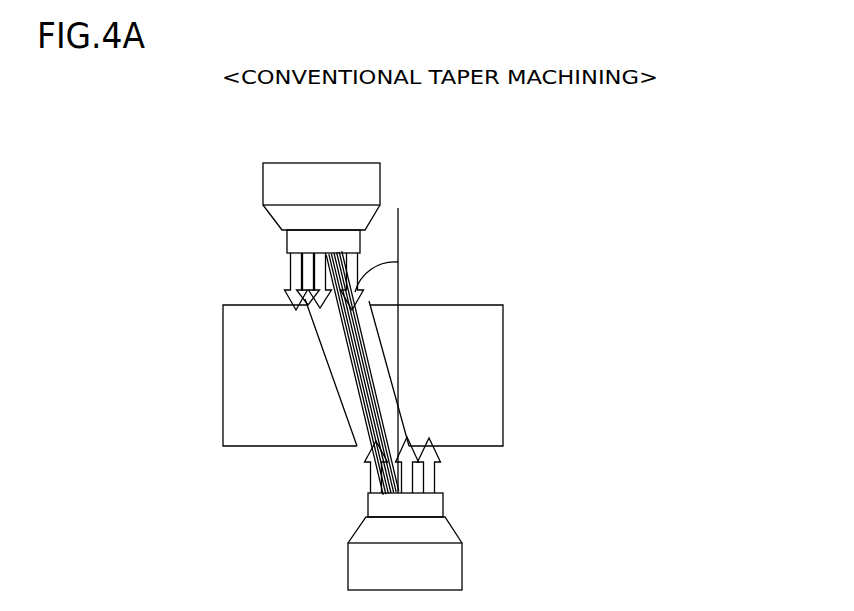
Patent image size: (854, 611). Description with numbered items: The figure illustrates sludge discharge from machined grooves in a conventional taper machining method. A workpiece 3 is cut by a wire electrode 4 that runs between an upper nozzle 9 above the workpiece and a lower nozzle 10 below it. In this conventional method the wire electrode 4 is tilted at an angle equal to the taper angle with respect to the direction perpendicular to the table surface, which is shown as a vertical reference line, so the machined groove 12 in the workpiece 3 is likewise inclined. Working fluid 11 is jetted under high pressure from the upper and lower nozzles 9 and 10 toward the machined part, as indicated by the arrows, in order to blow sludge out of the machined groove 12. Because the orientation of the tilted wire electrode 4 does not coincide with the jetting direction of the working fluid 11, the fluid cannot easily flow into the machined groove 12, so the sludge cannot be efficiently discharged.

The workpiece 3 is at (503, 342).
The wire electrode 4 is at (402, 298).
The upper nozzle 9 is at (380, 172).
The lower nozzle 10 is at (462, 557).
The working fluid 11 is at (287, 279).
The machined groove 12 is at (368, 363).